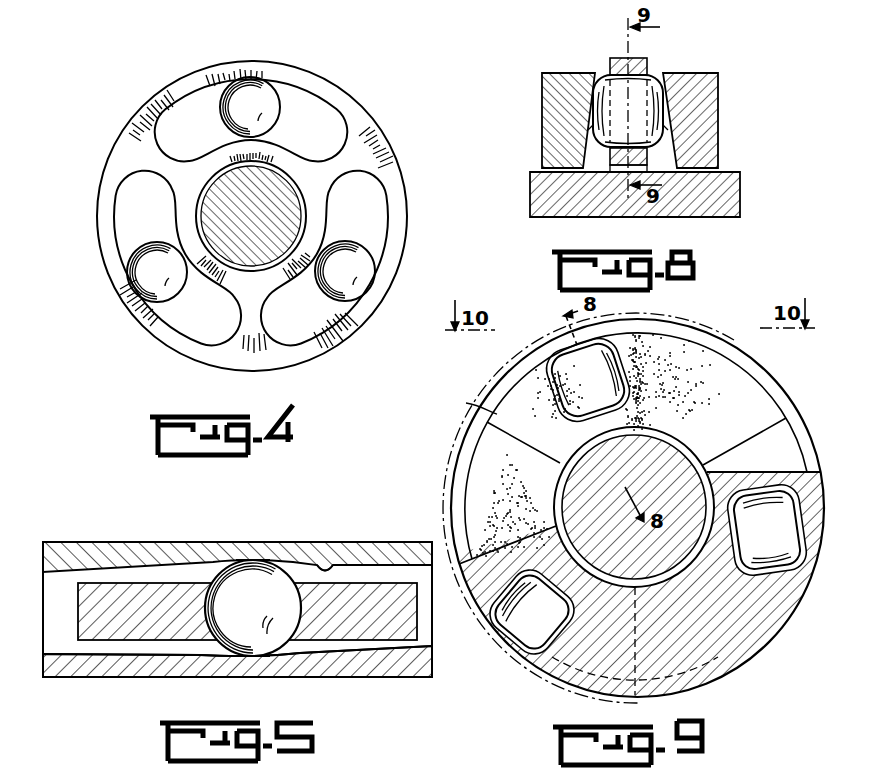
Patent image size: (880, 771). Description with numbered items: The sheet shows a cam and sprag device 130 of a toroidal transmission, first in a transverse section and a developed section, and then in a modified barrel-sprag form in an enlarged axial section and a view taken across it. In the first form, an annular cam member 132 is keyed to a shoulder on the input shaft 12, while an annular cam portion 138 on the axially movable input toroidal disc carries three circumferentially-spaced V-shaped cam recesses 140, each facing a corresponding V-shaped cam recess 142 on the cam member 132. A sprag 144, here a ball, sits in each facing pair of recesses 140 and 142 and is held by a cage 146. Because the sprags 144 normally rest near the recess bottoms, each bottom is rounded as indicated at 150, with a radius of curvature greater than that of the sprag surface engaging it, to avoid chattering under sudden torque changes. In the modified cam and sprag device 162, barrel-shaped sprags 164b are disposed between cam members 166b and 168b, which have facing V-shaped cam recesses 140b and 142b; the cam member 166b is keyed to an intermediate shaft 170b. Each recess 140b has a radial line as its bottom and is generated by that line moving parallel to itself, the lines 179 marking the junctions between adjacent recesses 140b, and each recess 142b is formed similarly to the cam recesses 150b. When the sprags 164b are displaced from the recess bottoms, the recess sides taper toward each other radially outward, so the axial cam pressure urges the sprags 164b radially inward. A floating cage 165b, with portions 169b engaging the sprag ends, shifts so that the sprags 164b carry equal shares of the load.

In FIG. 4, the input shaft 12 is at (262, 214).
In FIG. 5, the cam and sprag device 130 is at (181, 536).
In FIG. 4, the annular cam member 132 is at (385, 137).
In FIG. 5, the annular cam member 132 is at (290, 548).
In FIG. 5, the annular cam portion 138 is at (380, 664).
In FIG. 4, the V-shaped cam recess 140 is at (310, 90).
In FIG. 5, the V-shaped cam recess 140 is at (332, 563).
In FIG. 5, the V-shaped cam recess 142 is at (315, 650).
In FIG. 4, the sprag 144 is at (257, 85).
In FIG. 5, the sprag 144 is at (275, 604).
In FIG. 5, the cage 146 is at (93, 632).
In FIG. 5, the rounded cam bottom 150 is at (239, 560).
In FIG. 8, the V-shaped cam recess 140b is at (581, 153).
In FIG. 9, the V-shaped cam recess 140b is at (683, 352).
In FIG. 8, the V-shaped cam recess 142b is at (678, 135).
In FIG. 9, the cam recess 150b is at (640, 400).
In FIG. 8, the cam and sprag device 162 is at (649, 42).
In FIG. 8, the barrel-shaped sprag 164b is at (655, 115).
In FIG. 9, the barrel-shaped sprag 164b is at (611, 395).
In FIG. 8, the floating cage 165b is at (613, 56).
In FIG. 9, the floating cage 165b is at (637, 319).
In FIG. 8, the cam member 166b is at (568, 83).
In FIG. 9, the cam member 166b is at (531, 363).
In FIG. 8, the cam member 168b is at (697, 82).
In FIG. 8, the cage portions 169b is at (645, 60).
In FIG. 9, the cage portions 169b is at (821, 606).
In FIG. 8, the intermediate shaft 170b is at (603, 207).
In FIG. 9, the intermediate shaft 170b is at (676, 485).
In FIG. 9, the junction lines 179 is at (467, 401).